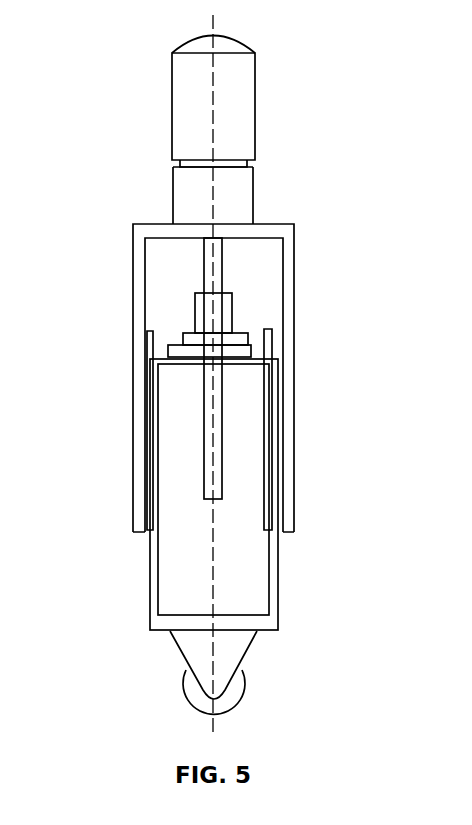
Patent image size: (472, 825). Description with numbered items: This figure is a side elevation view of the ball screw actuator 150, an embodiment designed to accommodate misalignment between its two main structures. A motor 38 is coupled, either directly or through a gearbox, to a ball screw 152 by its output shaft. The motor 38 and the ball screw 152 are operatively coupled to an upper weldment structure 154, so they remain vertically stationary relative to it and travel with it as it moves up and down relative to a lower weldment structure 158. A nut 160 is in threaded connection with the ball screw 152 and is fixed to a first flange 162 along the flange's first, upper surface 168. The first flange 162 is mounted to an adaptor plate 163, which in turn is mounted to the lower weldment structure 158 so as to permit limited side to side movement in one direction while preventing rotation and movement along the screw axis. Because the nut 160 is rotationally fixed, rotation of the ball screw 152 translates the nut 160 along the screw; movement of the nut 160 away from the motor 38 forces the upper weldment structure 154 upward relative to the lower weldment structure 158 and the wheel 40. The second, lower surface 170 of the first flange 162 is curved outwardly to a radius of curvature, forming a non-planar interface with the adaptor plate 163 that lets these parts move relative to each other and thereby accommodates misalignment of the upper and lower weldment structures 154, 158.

The ball screw actuator 150 is at (113, 29).
The motor 38 is at (243, 93).
The wheel 40 is at (235, 688).
The ball screw 152 is at (218, 256).
The upper weldment structure 154 is at (288, 265).
The lower weldment structure 158 is at (267, 575).
The nut 160 is at (225, 310).
The first flange 162 is at (194, 340).
The adaptor plate 163 is at (243, 352).
The first, upper surface 168 is at (190, 337).
The second, lower surface 170 is at (187, 357).